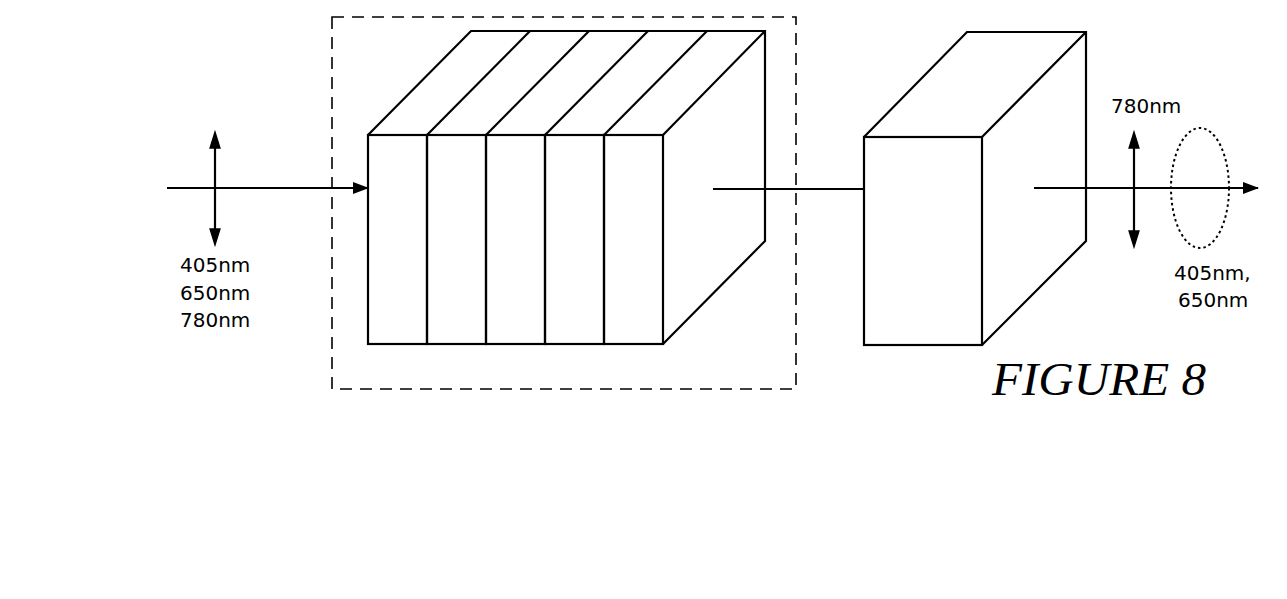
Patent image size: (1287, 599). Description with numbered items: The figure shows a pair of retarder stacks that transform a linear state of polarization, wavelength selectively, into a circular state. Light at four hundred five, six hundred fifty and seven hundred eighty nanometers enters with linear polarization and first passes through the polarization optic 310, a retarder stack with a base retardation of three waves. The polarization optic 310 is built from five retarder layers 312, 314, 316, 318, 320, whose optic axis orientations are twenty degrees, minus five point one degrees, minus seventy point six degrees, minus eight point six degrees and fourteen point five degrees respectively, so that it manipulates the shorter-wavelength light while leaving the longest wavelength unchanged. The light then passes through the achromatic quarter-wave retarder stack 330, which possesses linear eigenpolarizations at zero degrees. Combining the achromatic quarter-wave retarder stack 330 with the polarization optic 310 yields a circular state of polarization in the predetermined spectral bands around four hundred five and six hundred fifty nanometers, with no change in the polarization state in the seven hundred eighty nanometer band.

The polarization optic 310 is at (787, 382).
The retarder layer 312 is at (383, 239).
The retarder layer 314 is at (442, 239).
The retarder layer 316 is at (501, 239).
The retarder layer 318 is at (560, 239).
The retarder layer 320 is at (619, 239).
The achromatic quarter-wave retarder stack 330 is at (908, 239).